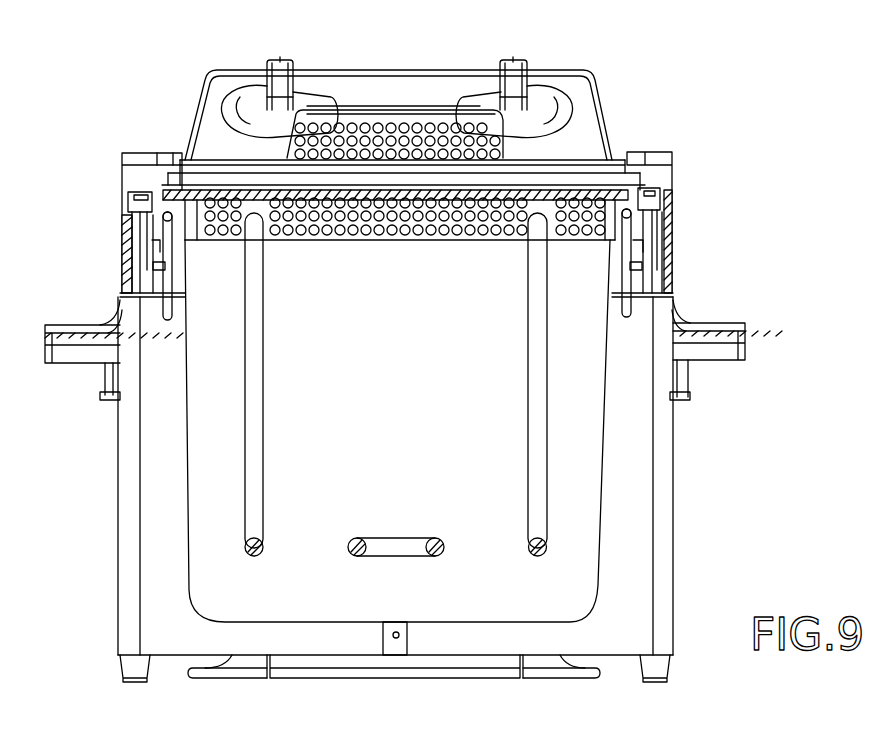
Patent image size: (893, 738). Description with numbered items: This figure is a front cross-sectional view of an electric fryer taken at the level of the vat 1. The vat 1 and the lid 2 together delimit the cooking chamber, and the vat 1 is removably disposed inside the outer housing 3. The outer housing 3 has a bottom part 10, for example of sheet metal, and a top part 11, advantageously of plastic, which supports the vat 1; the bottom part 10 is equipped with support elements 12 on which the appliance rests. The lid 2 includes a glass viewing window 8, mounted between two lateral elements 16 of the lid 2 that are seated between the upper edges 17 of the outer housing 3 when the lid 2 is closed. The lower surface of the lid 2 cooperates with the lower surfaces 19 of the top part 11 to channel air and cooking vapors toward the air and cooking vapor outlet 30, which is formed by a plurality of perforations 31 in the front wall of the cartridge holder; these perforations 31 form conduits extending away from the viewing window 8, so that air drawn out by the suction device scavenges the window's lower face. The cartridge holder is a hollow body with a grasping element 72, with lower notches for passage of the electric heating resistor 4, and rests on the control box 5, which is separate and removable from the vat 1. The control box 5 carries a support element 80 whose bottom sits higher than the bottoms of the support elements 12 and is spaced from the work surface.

The vat 1 is at (610, 437).
The lid 2 is at (652, 172).
The outer housing 3 is at (413, 476).
The electric heating resistor 4 is at (394, 637).
The control box 5 is at (405, 84).
The viewing window 8 is at (233, 210).
The bottom part 10 is at (673, 497).
The top part 11 is at (672, 248).
The support elements 12 is at (130, 683).
The lateral elements 16 is at (135, 197).
The upper edges 17 is at (126, 208).
The lower surfaces 19 is at (140, 250).
The air and cooking vapor outlet 30 is at (416, 155).
The perforations 31 is at (212, 210).
The grasping element 72 is at (440, 108).
The support element 80 is at (340, 679).